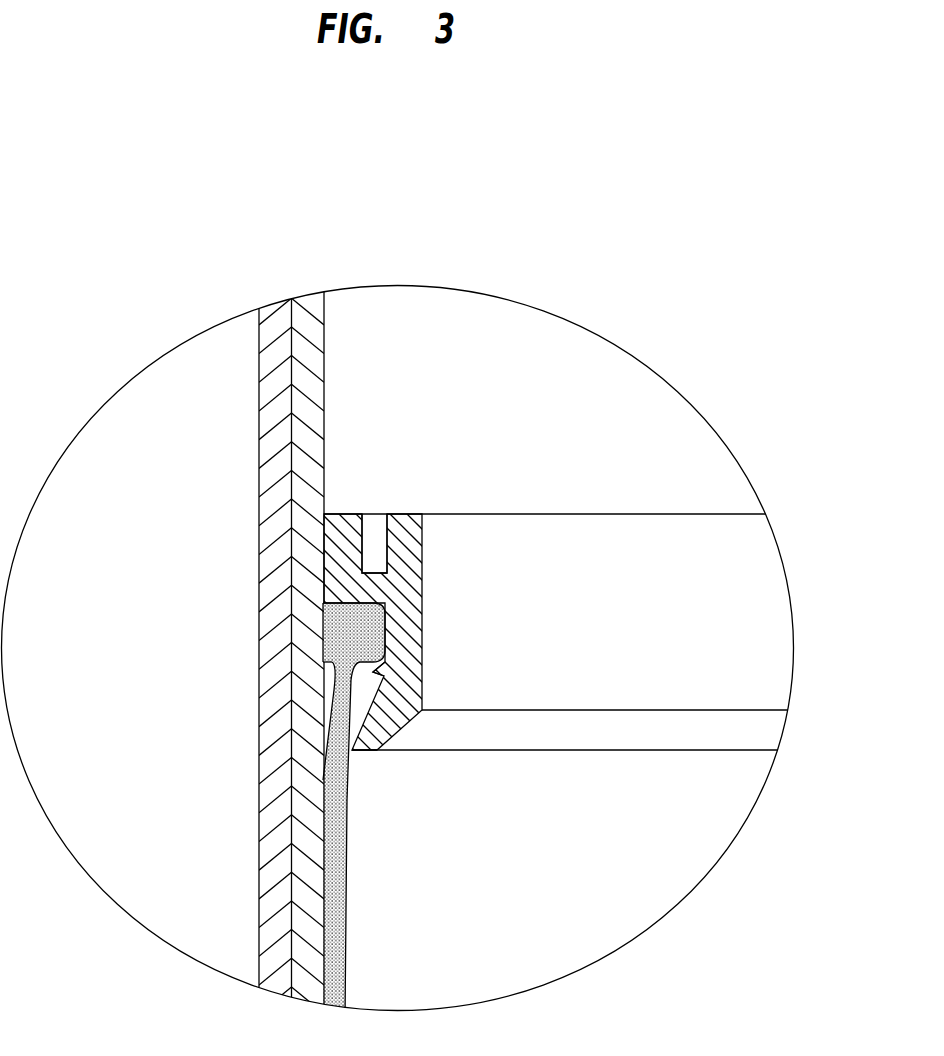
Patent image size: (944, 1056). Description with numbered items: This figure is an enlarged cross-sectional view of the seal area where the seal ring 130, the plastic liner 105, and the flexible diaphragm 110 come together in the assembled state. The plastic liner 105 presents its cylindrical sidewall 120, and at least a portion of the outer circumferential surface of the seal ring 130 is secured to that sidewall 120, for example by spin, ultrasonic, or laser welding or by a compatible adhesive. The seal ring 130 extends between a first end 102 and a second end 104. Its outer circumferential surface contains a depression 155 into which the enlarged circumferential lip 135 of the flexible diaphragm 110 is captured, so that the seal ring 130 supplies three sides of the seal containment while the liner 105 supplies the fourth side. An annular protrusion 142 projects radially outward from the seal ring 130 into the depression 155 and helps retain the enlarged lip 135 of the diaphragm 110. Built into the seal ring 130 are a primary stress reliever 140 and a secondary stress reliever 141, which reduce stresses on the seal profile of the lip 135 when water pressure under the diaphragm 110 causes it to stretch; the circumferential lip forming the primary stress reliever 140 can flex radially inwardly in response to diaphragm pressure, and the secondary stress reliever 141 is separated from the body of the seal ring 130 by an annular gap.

The first end 102 is at (430, 782).
The second end 104 is at (471, 467).
The plastic liner 105 is at (326, 407).
The flexible diaphragm 110 is at (346, 968).
The cylindrical sidewall 120 is at (259, 488).
The seal ring 130 is at (599, 514).
The enlarged circumferential lip 135 is at (330, 642).
The primary stress reliever 140 is at (362, 757).
The secondary stress reliever 141 is at (410, 513).
The annular protrusion 142 is at (380, 677).
The depression 155 is at (384, 603).